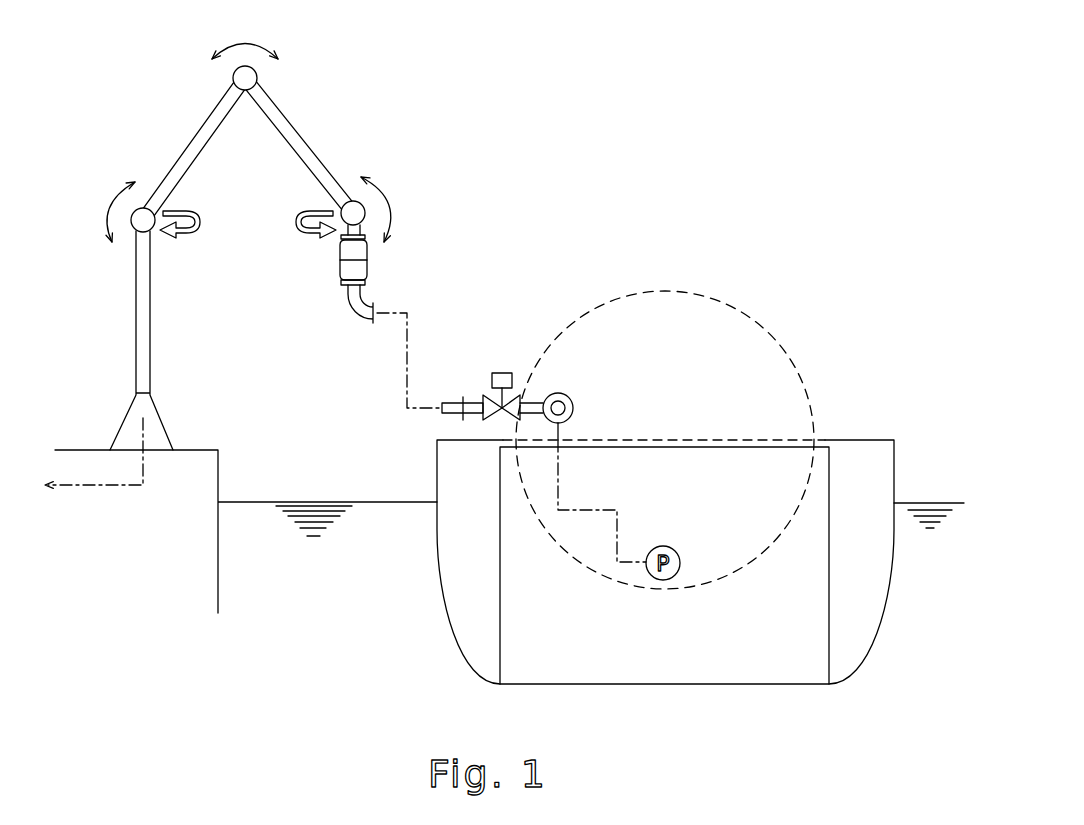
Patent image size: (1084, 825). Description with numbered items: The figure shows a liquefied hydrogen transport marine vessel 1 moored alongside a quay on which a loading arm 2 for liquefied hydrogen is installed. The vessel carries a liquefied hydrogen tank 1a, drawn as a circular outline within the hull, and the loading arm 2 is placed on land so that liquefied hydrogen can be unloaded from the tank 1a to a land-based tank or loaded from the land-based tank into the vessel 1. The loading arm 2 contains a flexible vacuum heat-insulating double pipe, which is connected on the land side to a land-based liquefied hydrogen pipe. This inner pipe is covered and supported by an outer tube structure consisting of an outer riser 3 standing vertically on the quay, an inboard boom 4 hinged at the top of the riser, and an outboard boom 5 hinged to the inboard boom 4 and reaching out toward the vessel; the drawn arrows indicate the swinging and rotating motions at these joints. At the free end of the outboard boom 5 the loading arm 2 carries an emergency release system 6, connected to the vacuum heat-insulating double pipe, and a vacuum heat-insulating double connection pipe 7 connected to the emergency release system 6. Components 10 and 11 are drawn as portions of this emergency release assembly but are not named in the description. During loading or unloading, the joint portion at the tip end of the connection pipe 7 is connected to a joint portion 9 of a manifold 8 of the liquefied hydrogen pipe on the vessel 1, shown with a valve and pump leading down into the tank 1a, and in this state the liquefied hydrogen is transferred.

The liquefied hydrogen transport marine vessel 1 is at (769, 258).
The liquefied hydrogen tank 1a is at (778, 345).
The loading arm 2 is at (248, 128).
The outer riser 3 is at (136, 317).
The inboard boom 4 is at (190, 138).
The outboard boom 5 is at (300, 132).
The emergency release system 6 is at (373, 284).
The vacuum heat-insulating double connection pipe 7 is at (362, 318).
The manifold 8 is at (485, 346).
The joint portion 9 is at (450, 402).
The swivel joint 10 is at (348, 248).
The emergency release coupling 11 is at (348, 272).